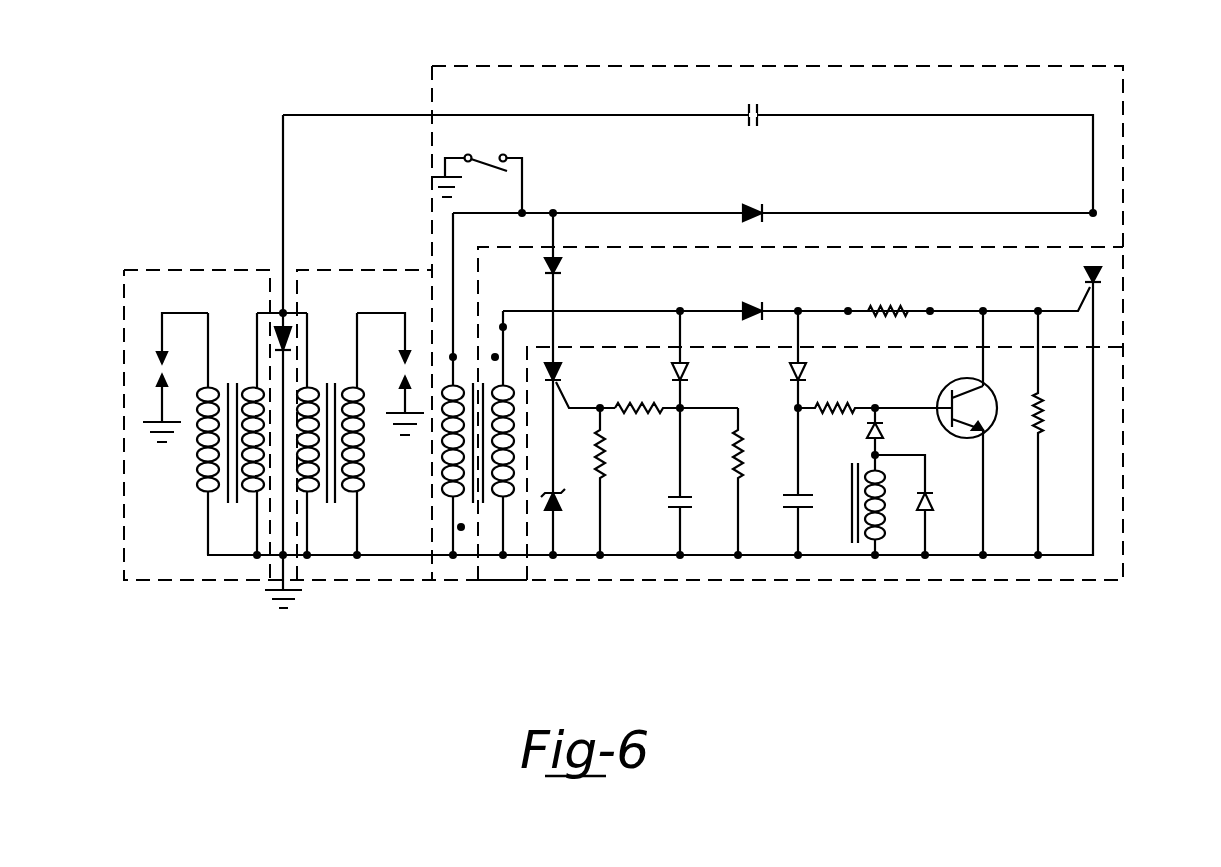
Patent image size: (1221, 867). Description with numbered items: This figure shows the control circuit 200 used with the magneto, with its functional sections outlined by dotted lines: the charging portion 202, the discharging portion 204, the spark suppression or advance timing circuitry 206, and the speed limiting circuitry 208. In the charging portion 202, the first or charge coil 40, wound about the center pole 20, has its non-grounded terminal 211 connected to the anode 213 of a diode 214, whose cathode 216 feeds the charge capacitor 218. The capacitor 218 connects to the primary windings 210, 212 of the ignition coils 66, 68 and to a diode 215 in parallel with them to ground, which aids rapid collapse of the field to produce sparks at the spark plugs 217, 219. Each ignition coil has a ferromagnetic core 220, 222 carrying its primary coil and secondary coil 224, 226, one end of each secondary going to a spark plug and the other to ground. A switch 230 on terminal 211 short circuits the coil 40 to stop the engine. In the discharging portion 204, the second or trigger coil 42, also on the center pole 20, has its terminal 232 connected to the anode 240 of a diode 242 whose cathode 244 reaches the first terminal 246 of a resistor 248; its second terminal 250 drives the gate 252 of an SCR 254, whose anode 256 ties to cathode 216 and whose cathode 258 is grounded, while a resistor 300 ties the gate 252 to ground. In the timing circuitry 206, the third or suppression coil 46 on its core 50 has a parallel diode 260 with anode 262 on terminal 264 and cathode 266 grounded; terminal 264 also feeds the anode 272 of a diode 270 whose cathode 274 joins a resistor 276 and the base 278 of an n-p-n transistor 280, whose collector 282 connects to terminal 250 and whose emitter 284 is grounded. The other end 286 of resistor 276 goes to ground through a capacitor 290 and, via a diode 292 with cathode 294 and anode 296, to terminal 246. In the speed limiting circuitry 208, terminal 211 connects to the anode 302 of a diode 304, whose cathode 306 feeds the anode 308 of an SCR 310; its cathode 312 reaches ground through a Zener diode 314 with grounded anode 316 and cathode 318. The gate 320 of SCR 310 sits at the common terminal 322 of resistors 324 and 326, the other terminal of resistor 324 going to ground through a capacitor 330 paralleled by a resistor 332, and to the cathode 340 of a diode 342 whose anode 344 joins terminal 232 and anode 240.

The center pole 20 is at (469, 420).
The first or charge coil 40 is at (445, 440).
The second or trigger coil 42 is at (514, 450).
The third or suppression coil 46 is at (882, 528).
The ferromagnetic core 50 is at (852, 497).
The ignition coil 66 is at (160, 270).
The ignition coil 68 is at (340, 270).
The control circuit 200 is at (604, 53).
The charging portion 202 is at (487, 66).
The discharging portion 204 is at (500, 582).
The spark suppression or advance timing circuitry 206 is at (1110, 542).
The speed limiting function circuitry 208 is at (600, 582).
The primary winding 210 is at (164, 361).
The non-grounded terminal 211 is at (452, 355).
The primary winding 212 is at (308, 330).
The anode 213 is at (740, 210).
The diode 214 is at (771, 197).
The diode 215 is at (287, 310).
The cathode 216 is at (770, 213).
The spark plug 217 is at (160, 370).
The charge capacitor 218 is at (762, 108).
The spark plug 219 is at (400, 368).
The ferromagnetic core 220 is at (252, 385).
The ferromagnetic core 222 is at (361, 417).
The secondary coil 224 is at (200, 465).
The secondary coil 226 is at (360, 470).
The switch 230 is at (490, 158).
The non-grounded terminal 232 is at (502, 326).
The anode 240 is at (745, 305).
The diode 242 is at (757, 302).
The cathode 244 is at (767, 312).
The first terminal 246 is at (897, 284).
The resistor 248 is at (885, 305).
The second terminal 250 is at (947, 292).
The gate 252 is at (1078, 303).
The silicon controlled rectifier 254 is at (1095, 266).
The anode 256 is at (1102, 282).
The cathode 258 is at (1102, 290).
The diode 260 is at (934, 500).
The anode 262 is at (922, 490).
The non-grounded terminal 264 is at (872, 460).
The cathode 266 is at (930, 508).
The diode 270 is at (883, 426).
The anode 272 is at (883, 440).
The cathode 274 is at (868, 425).
The resistor 276 is at (840, 407).
The base 278 is at (952, 402).
The n-p-n transistor 280 is at (985, 380).
The collector 282 is at (958, 380).
The emitter 284 is at (976, 430).
The other end 286 is at (797, 413).
The capacitor 290 is at (811, 495).
The diode 292 is at (808, 370).
The cathode 294 is at (795, 411).
The anode 296 is at (804, 378).
The resistor 300 is at (1045, 410).
The anode 302 is at (560, 262).
The diode 304 is at (558, 270).
The cathode 306 is at (558, 277).
The anode 308 is at (558, 362).
The SCR 310 is at (560, 369).
The cathode 312 is at (549, 384).
The Zener diode 314 is at (558, 508).
The anode 316 is at (545, 505).
The cathode 318 is at (556, 494).
The gate 320 is at (560, 386).
The common terminal 322 is at (615, 400).
The resistor 324 is at (640, 412).
The resistor 326 is at (604, 455).
The capacitor 330 is at (672, 500).
The resistor 332 is at (735, 470).
The cathode 340 is at (688, 382).
The diode 342 is at (688, 375).
The anode 344 is at (680, 360).